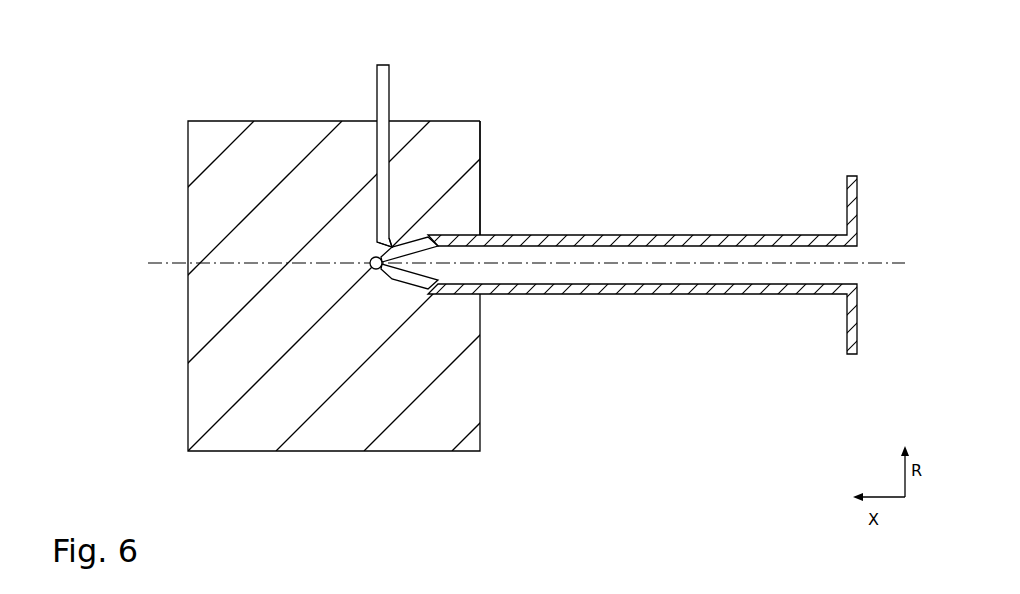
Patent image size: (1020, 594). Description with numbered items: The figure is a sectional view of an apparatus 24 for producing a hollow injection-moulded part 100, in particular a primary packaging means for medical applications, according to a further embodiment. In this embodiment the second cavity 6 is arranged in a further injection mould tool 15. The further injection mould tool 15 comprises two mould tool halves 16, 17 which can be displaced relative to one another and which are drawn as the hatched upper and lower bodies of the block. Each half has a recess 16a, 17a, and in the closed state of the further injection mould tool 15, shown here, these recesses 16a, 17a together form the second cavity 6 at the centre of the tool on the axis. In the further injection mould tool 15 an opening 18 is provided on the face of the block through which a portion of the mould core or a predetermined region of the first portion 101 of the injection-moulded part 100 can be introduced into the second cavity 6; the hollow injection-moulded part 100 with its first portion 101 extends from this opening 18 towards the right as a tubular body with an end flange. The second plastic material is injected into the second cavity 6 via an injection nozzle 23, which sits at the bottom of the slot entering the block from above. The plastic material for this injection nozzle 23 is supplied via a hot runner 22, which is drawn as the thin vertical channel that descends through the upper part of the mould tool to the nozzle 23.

The apparatus 24 is at (510, 271).
The further injection mould tool 15 is at (206, 125).
The mould tool half 16 is at (377, 173).
The recess 16a is at (418, 250).
The mould tool half 17 is at (341, 385).
The recess 17a is at (389, 275).
The opening 18 is at (482, 232).
The hot runner 22 is at (377, 92).
The injection nozzle 23 is at (396, 246).
The second cavity 6 is at (374, 270).
The hollow injection-moulded part 100 is at (650, 265).
The first portion 101 is at (624, 234).